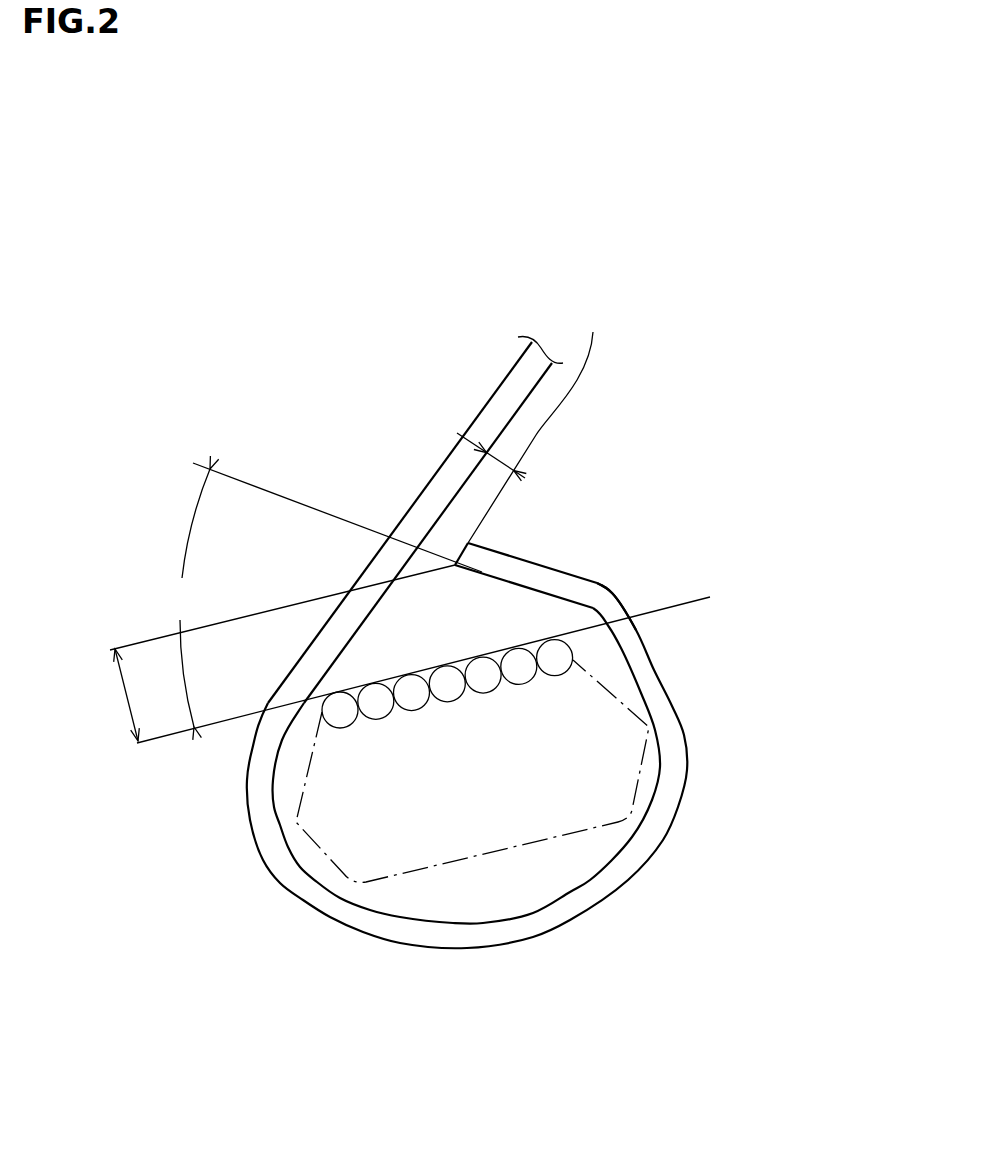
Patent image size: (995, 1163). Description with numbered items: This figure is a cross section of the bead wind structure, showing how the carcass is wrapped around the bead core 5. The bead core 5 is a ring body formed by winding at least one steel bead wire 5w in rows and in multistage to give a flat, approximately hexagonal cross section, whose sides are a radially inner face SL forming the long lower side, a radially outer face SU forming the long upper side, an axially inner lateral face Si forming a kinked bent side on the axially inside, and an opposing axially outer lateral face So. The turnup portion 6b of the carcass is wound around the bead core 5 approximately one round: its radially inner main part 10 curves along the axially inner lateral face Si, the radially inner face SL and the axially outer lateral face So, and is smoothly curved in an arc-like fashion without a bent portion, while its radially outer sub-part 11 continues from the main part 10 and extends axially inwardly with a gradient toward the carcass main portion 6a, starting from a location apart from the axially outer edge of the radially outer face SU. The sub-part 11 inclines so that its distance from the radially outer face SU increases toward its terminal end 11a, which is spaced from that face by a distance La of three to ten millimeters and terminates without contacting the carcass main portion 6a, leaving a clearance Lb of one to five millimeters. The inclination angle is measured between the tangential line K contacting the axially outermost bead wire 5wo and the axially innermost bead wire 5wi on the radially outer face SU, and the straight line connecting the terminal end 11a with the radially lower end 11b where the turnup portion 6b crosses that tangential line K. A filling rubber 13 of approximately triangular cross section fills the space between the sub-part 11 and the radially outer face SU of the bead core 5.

The main part 10 is at (467, 840).
The turnup portion 6b is at (402, 944).
The carcass main portion 6a is at (508, 395).
The sub-part 11 is at (557, 568).
The terminal end 11a is at (490, 535).
The radially lower end 11b is at (609, 624).
The clearance Lb is at (533, 422).
The distance La is at (400, 654).
The radially outer face SU is at (300, 609).
The tangential line K is at (391, 676).
The filling rubber 13 is at (487, 633).
The bead core 5 is at (492, 784).
The axially outermost bead wire 5wo is at (588, 684).
The bead wire 5w is at (560, 667).
The axially outer lateral face So is at (647, 753).
The axially innermost bead wire 5wi is at (328, 824).
The axially inner lateral face Si is at (330, 858).
The radially inner face SL is at (483, 857).